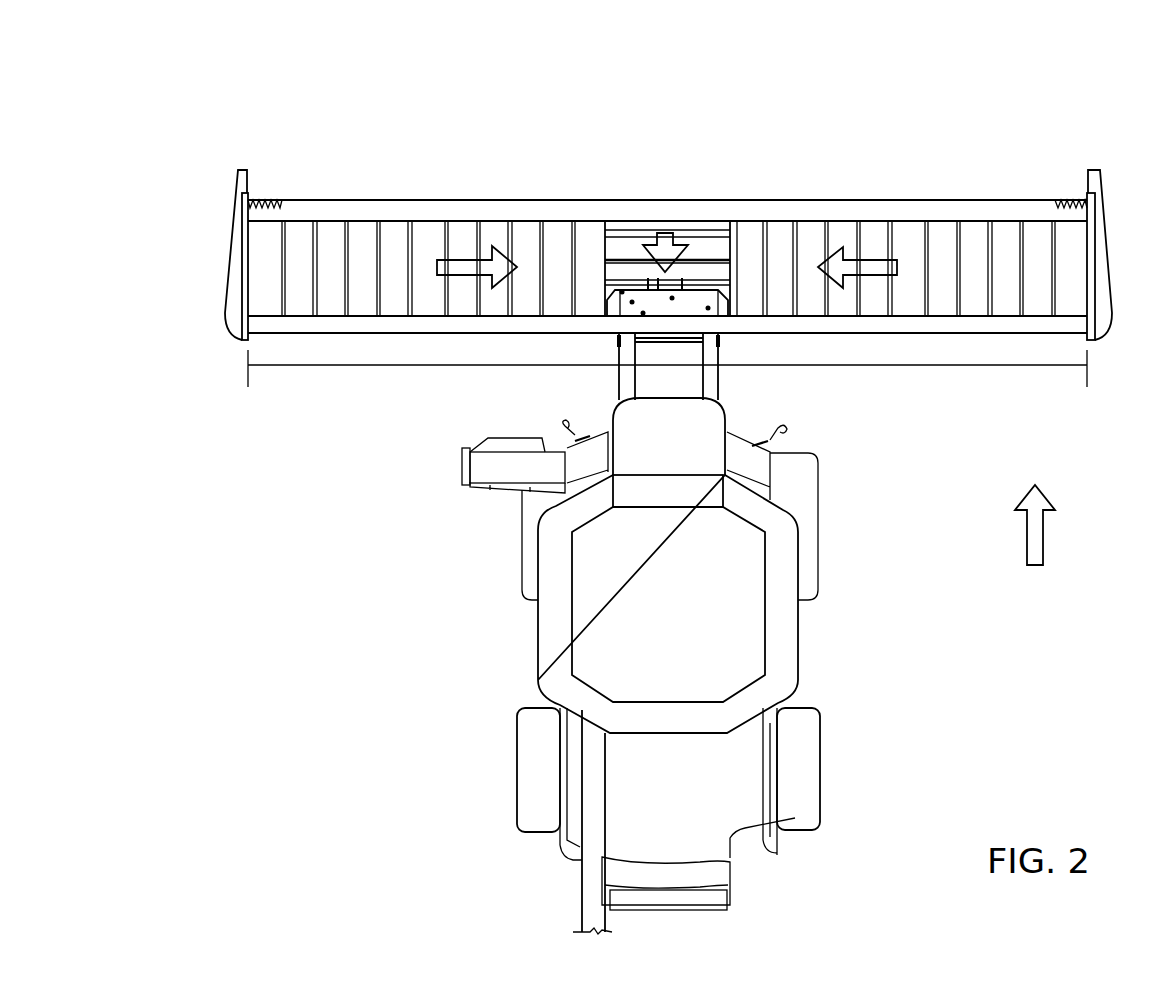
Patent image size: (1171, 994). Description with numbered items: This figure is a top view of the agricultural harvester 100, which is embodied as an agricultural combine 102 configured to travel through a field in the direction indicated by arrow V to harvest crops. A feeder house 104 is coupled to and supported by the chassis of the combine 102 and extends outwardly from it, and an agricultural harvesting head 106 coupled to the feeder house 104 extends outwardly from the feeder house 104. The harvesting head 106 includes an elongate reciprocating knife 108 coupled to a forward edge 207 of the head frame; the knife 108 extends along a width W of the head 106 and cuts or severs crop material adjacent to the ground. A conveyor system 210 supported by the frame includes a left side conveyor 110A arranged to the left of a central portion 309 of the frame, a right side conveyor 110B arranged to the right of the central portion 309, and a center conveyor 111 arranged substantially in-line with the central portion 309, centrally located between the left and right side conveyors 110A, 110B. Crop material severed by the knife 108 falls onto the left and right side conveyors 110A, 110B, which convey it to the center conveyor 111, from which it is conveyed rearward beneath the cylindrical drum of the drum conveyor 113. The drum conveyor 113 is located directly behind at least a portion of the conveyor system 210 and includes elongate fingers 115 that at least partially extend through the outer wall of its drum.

The agricultural harvester 100 is at (332, 583).
The agricultural combine 102 is at (802, 637).
The feeder house 104 is at (618, 352).
The agricultural harvesting head 106 is at (328, 333).
The elongate reciprocating knife 108 is at (264, 195).
The left side conveyor 110A is at (395, 243).
The right side conveyor 110B is at (875, 238).
The center conveyor 111 is at (701, 235).
The drum conveyor 113 is at (695, 300).
The elongate fingers 115 is at (647, 284).
The forward edge 207 is at (1012, 197).
The conveyor system 210 is at (438, 90).
The central portion 309 is at (664, 200).
The width W is at (952, 367).
The direction of travel V is at (1043, 525).